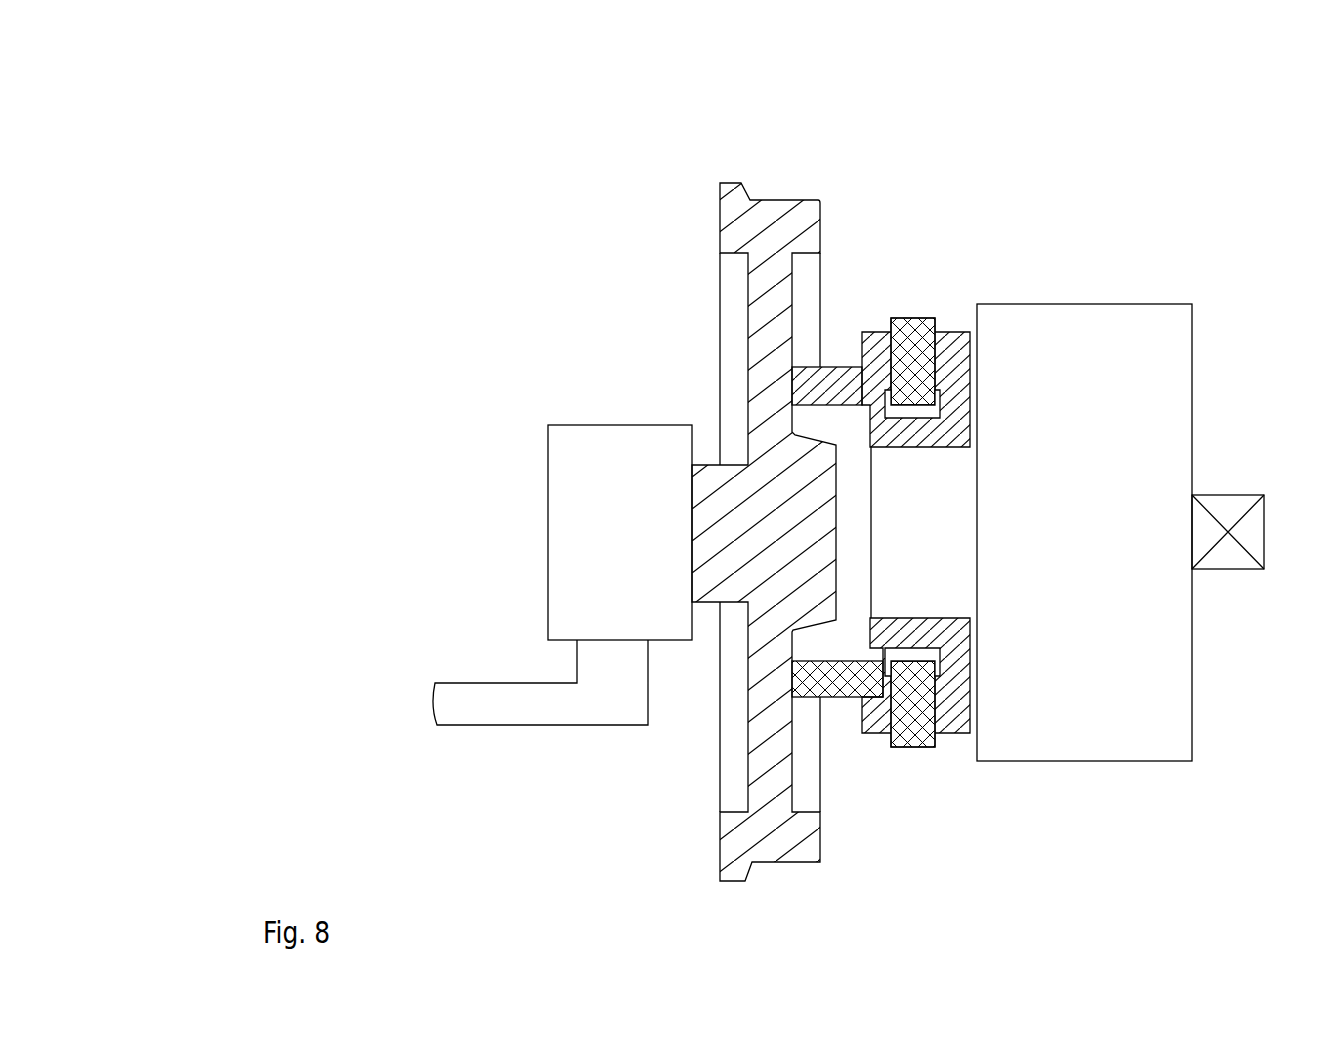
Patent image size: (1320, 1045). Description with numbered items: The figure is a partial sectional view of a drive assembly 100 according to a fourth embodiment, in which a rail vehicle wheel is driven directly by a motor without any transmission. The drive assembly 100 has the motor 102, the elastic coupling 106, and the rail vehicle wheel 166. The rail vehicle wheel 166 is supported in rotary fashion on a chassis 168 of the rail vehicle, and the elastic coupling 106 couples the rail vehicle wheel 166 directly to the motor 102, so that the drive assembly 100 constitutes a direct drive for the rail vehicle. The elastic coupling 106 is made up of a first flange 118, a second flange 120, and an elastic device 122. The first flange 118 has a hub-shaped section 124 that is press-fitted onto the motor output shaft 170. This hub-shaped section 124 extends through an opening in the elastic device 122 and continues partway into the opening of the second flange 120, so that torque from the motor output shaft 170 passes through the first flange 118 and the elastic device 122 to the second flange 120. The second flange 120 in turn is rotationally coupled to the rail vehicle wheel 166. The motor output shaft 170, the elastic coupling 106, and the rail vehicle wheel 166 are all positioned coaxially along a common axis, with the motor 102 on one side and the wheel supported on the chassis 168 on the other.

The drive assembly 100 is at (1124, 392).
The motor 102 is at (1156, 290).
The elastic coupling 106 is at (916, 529).
The first flange 118 is at (953, 718).
The second flange 120 is at (873, 720).
The elastic device 122 is at (912, 733).
The hub-shaped section 124 is at (915, 422).
The rail vehicle wheel 166 is at (802, 170).
The chassis 168 is at (578, 413).
The motor output shaft 170 is at (888, 503).